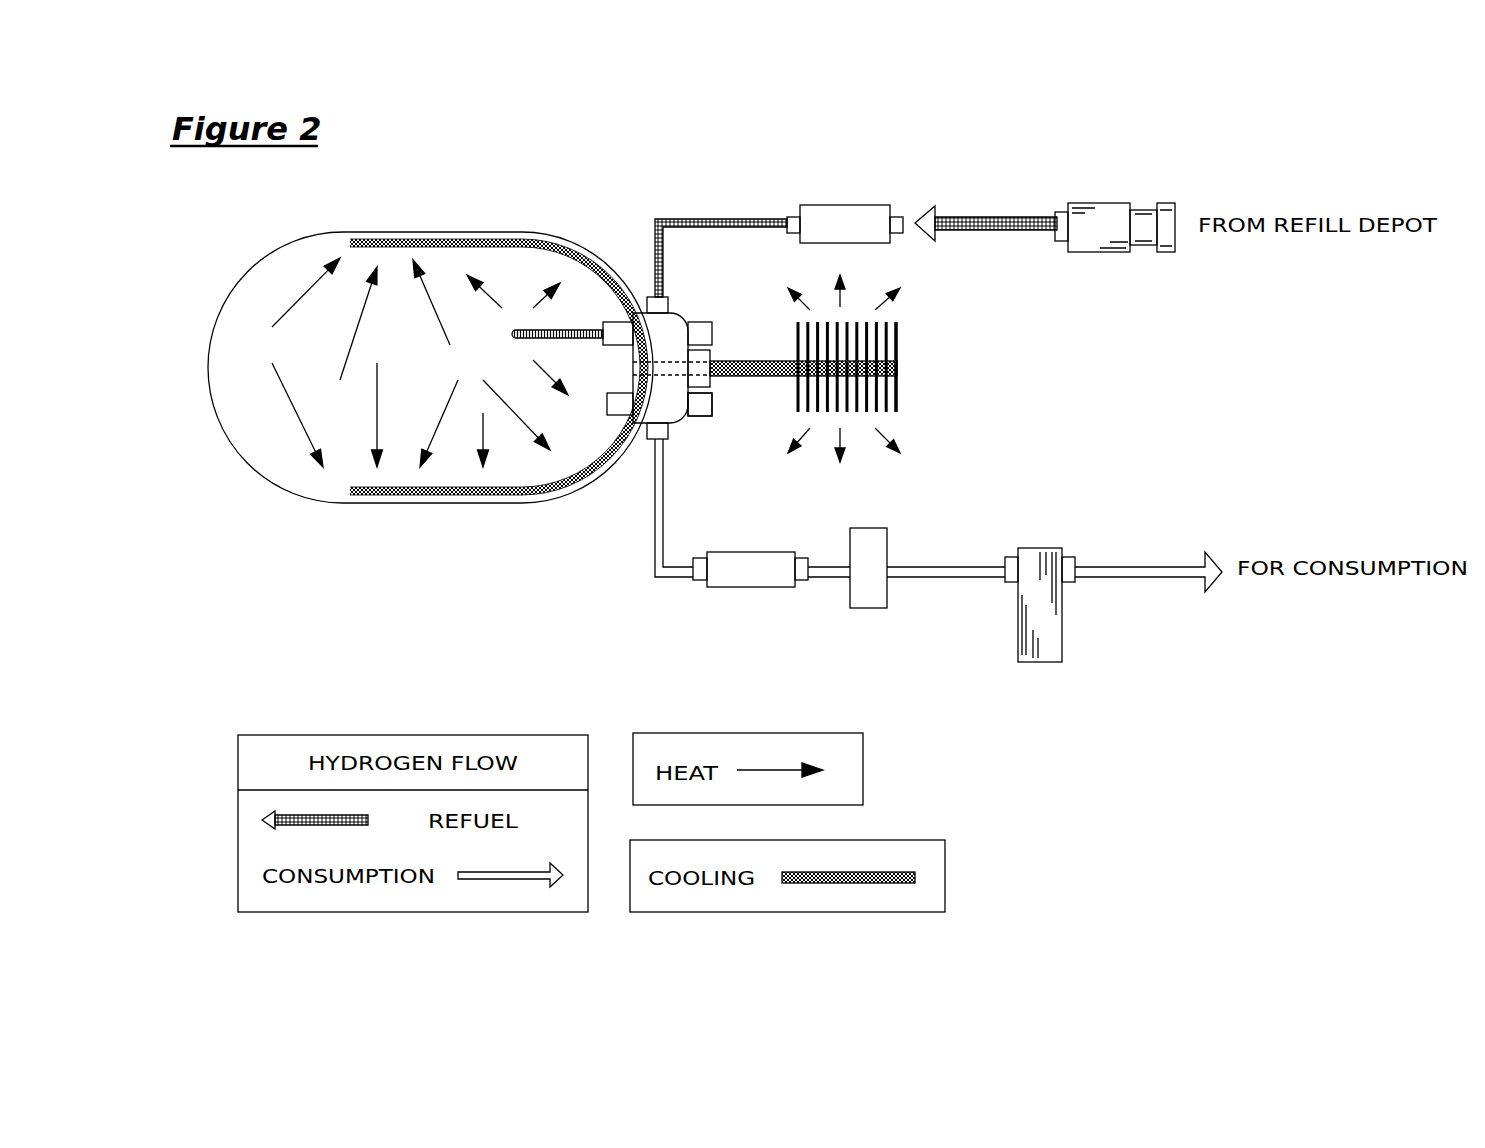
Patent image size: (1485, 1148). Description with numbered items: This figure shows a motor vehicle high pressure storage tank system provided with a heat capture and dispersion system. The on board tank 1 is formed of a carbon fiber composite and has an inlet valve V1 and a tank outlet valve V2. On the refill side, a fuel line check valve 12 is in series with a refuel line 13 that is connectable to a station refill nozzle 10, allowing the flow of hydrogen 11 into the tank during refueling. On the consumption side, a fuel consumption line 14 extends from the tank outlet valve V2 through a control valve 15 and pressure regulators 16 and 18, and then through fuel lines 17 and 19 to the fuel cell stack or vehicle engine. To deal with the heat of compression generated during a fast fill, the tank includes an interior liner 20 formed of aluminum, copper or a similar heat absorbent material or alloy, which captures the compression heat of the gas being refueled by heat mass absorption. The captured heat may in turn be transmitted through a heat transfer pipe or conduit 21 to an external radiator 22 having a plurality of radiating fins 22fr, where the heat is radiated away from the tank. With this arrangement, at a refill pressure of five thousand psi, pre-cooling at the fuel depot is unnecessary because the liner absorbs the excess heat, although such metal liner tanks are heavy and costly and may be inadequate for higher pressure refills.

The on board tank 1 is at (233, 452).
The station refill nozzle 10 is at (1103, 252).
The flow of hydrogen 11 is at (988, 231).
The fuel line check valve 12 is at (843, 205).
The refuel line 13 is at (717, 219).
The fuel consumption line 14 is at (655, 558).
The control valve 15 is at (752, 590).
The pressure regulator 16 is at (870, 610).
The fuel line 17 is at (941, 567).
The pressure regulator 18 is at (1039, 664).
The fuel line 19 is at (1147, 567).
The interior liner 20 is at (455, 243).
The heat transfer pipe 21 is at (757, 360).
The external radiator 22 is at (898, 378).
The radiating fins 22fr is at (897, 400).
The inlet valve V1 is at (700, 321).
The tank outlet valve V2 is at (700, 420).